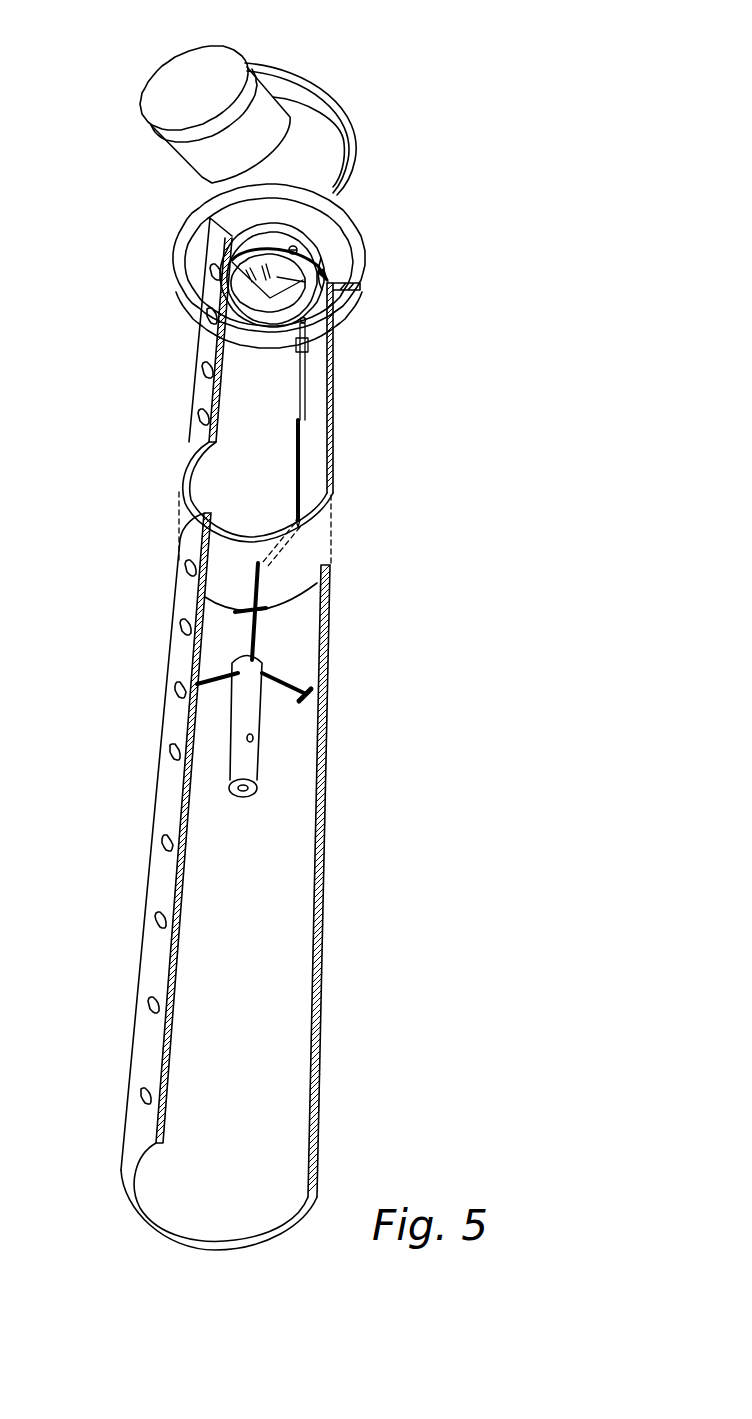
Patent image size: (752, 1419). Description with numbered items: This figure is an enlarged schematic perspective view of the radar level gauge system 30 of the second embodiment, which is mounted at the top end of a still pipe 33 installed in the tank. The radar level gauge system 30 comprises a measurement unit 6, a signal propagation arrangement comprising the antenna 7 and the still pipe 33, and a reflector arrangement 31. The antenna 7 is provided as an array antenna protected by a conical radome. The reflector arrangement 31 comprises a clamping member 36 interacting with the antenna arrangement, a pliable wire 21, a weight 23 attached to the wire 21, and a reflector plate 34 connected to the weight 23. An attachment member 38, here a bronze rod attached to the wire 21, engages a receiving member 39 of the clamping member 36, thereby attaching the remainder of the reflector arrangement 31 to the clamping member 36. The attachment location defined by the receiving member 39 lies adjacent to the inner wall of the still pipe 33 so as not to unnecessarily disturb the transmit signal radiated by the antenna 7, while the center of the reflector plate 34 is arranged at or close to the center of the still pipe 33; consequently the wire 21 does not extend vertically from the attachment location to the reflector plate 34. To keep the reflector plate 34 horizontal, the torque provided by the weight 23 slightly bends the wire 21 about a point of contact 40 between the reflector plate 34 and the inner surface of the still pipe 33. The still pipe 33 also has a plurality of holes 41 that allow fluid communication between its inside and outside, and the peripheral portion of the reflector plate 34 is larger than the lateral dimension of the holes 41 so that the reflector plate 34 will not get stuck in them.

The measurement unit 6 is at (330, 78).
The radar level gauge system 30 is at (460, 82).
The antenna 7 is at (330, 293).
The clamping member 36 is at (222, 342).
The still pipe 33 is at (197, 390).
The receiving member 39 is at (307, 343).
The attachment member 38 is at (306, 387).
The pliable wire 21 is at (303, 453).
The reflector arrangement 31 is at (282, 573).
The point of contact 40 is at (313, 693).
The reflector plate 34 is at (208, 690).
The weight 23 is at (240, 748).
The holes 41 is at (157, 922).